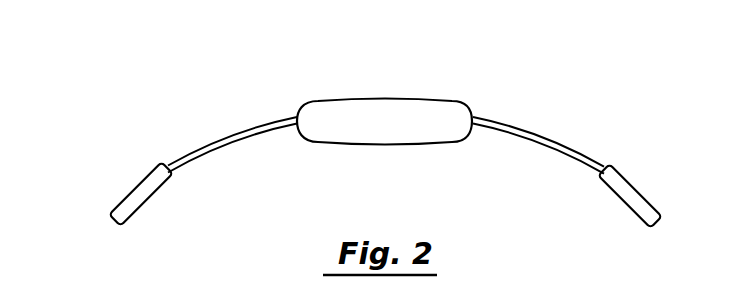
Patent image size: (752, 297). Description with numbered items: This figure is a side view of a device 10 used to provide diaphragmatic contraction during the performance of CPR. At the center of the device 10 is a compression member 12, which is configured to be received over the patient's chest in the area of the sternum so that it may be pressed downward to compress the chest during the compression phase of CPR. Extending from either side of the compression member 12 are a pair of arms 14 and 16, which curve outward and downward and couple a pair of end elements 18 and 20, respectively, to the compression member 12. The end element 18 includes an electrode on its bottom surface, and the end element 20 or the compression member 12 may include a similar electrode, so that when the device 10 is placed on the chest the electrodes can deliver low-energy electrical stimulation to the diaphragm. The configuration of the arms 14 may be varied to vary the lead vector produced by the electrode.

The device 10 is at (378, 119).
The compression member 12 is at (398, 108).
The arm 14 is at (543, 137).
The arm 16 is at (223, 139).
The end element 18 is at (640, 197).
The end element 20 is at (132, 197).